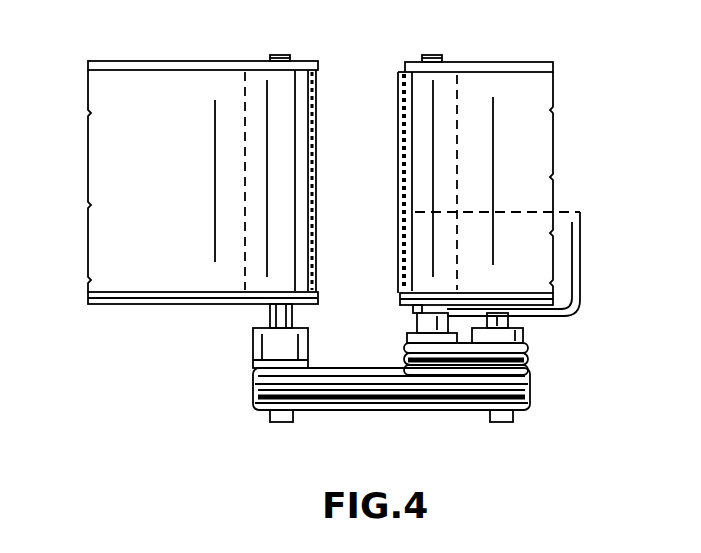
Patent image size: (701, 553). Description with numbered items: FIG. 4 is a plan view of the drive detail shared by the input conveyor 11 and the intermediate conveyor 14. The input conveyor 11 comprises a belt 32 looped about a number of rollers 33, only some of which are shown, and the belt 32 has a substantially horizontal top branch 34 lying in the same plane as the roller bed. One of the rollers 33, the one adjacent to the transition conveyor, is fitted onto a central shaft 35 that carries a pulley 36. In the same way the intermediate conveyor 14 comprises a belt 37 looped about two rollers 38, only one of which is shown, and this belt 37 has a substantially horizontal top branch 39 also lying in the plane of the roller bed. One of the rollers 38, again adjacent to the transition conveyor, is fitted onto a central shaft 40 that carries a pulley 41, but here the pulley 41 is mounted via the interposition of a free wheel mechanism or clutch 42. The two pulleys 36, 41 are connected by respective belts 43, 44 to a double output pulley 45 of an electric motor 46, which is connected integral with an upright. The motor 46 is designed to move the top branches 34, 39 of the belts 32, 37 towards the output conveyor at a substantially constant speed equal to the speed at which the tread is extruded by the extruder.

The input conveyor 11 is at (472, 54).
The intermediate conveyor 14 is at (195, 56).
The belt 32 is at (571, 177).
The rollers 33 is at (405, 63).
The top branch 34 is at (541, 135).
The central shaft 35 is at (410, 306).
The pulley 36 is at (418, 325).
The belt 37 is at (80, 140).
The rollers 38 is at (302, 122).
The top branch 39 is at (102, 172).
The central shaft 40 is at (270, 313).
The pulley 41 is at (255, 372).
The free wheel mechanism or clutch 42 is at (262, 343).
The belt 43 is at (528, 365).
The belt 44 is at (378, 386).
The double output pulley 45 is at (524, 336).
The electric motor 46 is at (572, 262).